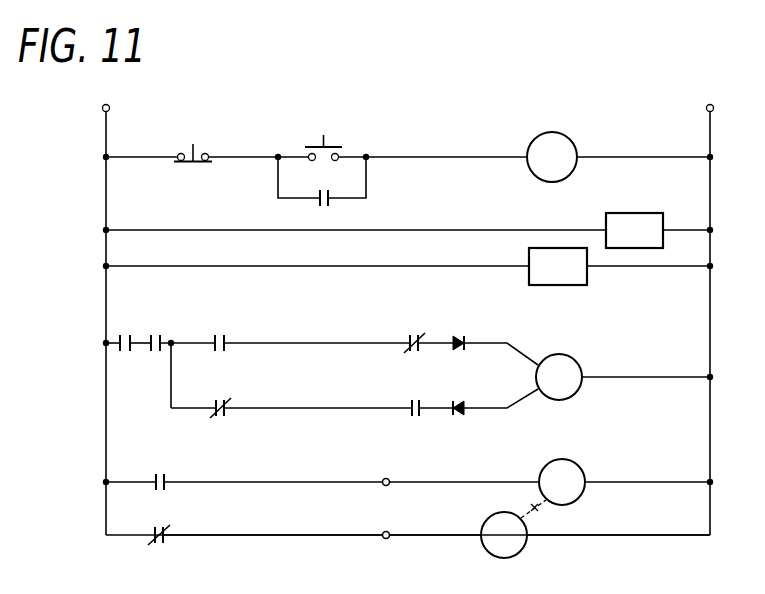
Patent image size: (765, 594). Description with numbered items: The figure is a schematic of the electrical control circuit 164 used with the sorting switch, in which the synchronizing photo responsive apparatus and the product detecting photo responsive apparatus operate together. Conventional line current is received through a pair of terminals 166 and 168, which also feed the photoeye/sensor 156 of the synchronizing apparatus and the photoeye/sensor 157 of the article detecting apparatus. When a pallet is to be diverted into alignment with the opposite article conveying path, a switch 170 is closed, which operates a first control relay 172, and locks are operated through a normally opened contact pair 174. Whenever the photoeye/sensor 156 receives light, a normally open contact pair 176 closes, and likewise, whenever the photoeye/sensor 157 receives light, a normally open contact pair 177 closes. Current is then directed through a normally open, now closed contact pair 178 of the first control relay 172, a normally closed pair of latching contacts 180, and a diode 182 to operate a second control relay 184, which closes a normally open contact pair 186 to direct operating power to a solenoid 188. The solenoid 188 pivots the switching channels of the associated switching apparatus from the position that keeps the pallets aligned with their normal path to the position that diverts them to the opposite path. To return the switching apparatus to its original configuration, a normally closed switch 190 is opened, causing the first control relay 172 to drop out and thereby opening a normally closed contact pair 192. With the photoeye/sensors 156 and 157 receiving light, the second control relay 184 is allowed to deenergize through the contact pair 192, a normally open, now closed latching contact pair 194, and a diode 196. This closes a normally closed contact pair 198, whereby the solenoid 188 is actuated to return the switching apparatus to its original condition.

The photoeye/sensor 156 is at (591, 284).
The photoeye/sensor 157 is at (620, 211).
The electrical control circuit 164 is at (236, 118).
The terminal 166 is at (102, 108).
The terminal 168 is at (706, 108).
The switch 170 is at (318, 139).
The first control relay 172 is at (534, 139).
The normally opened contact pair 174 is at (338, 204).
The normally open contact pair 176 is at (125, 334).
The normally open contact pair 177 is at (156, 334).
The normally open contact pair 178 is at (220, 334).
The normally closed latching contacts 180 is at (414, 334).
The diode 182 is at (458, 334).
The second control relay 184 is at (579, 356).
The normally open contact pair 186 is at (159, 473).
The solenoid 188 is at (580, 466).
The normally closed switch 190 is at (190, 146).
The normally closed contact pair 192 is at (226, 400).
The normally open latching contact pair 194 is at (410, 400).
The diode 196 is at (459, 400).
The normally closed contact pair 198 is at (168, 521).